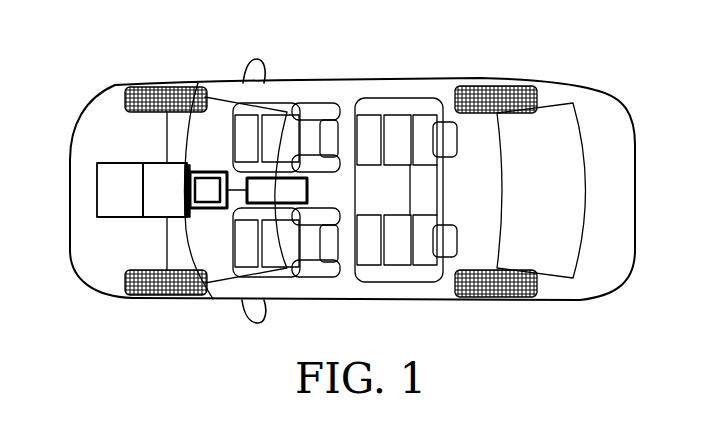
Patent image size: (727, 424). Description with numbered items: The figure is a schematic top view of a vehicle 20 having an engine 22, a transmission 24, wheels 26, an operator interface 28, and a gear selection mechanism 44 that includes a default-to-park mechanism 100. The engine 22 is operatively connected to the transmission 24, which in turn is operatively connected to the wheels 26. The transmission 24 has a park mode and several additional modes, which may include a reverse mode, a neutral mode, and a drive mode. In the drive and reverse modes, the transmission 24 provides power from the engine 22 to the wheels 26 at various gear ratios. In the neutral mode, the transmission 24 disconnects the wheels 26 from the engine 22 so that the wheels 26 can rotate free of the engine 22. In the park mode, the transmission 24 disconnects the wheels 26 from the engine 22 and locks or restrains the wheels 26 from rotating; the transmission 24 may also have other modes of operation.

The vehicle 20 is at (413, 58).
The engine 22 is at (118, 163).
The transmission 24 is at (163, 163).
The wheels 26 is at (160, 95).
The operator interface 28 is at (293, 190).
The gear selection mechanism 44 is at (208, 172).
The default-to-park mechanism 100 is at (207, 208).